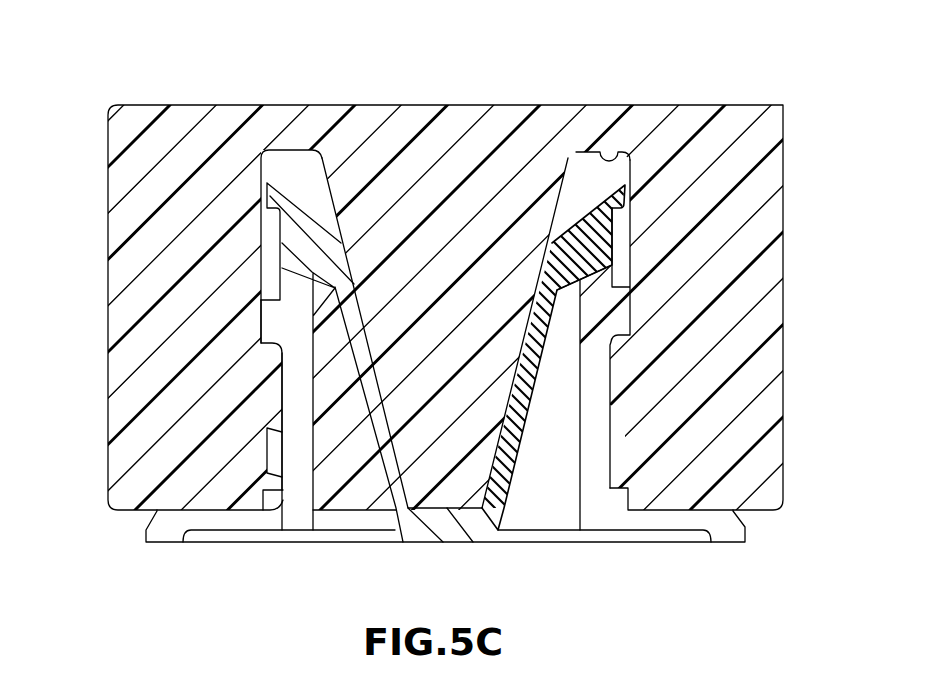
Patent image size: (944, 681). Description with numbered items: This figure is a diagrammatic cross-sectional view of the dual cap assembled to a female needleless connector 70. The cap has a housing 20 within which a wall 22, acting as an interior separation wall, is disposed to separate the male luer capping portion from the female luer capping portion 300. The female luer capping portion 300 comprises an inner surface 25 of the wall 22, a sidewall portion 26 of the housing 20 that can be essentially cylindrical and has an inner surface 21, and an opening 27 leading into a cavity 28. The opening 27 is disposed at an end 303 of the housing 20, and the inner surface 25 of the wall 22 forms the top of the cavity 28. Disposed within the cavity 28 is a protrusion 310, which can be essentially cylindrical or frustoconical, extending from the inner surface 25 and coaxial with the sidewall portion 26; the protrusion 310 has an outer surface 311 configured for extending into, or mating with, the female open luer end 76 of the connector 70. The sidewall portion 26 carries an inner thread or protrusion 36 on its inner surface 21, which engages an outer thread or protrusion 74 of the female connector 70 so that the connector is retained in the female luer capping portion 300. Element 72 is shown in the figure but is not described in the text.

The female luer capping portion 300 is at (141, 82).
The inner surface 21 is at (262, 228).
The cavity 28 is at (325, 185).
The wall 22 is at (455, 123).
The inner surface 25 is at (604, 150).
The latch tooth 72 is at (593, 327).
The housing 20 is at (785, 307).
The outer thread or protrusion 74 is at (268, 320).
The female open luer end 76 is at (333, 380).
The sidewall portion 26 is at (138, 388).
The inner thread or protrusion 36 is at (280, 418).
The end 303 is at (182, 513).
The opening 27 is at (268, 497).
The outer surface 311 is at (395, 452).
The protrusion 310 is at (463, 478).
The female needleless connector 70 is at (592, 513).